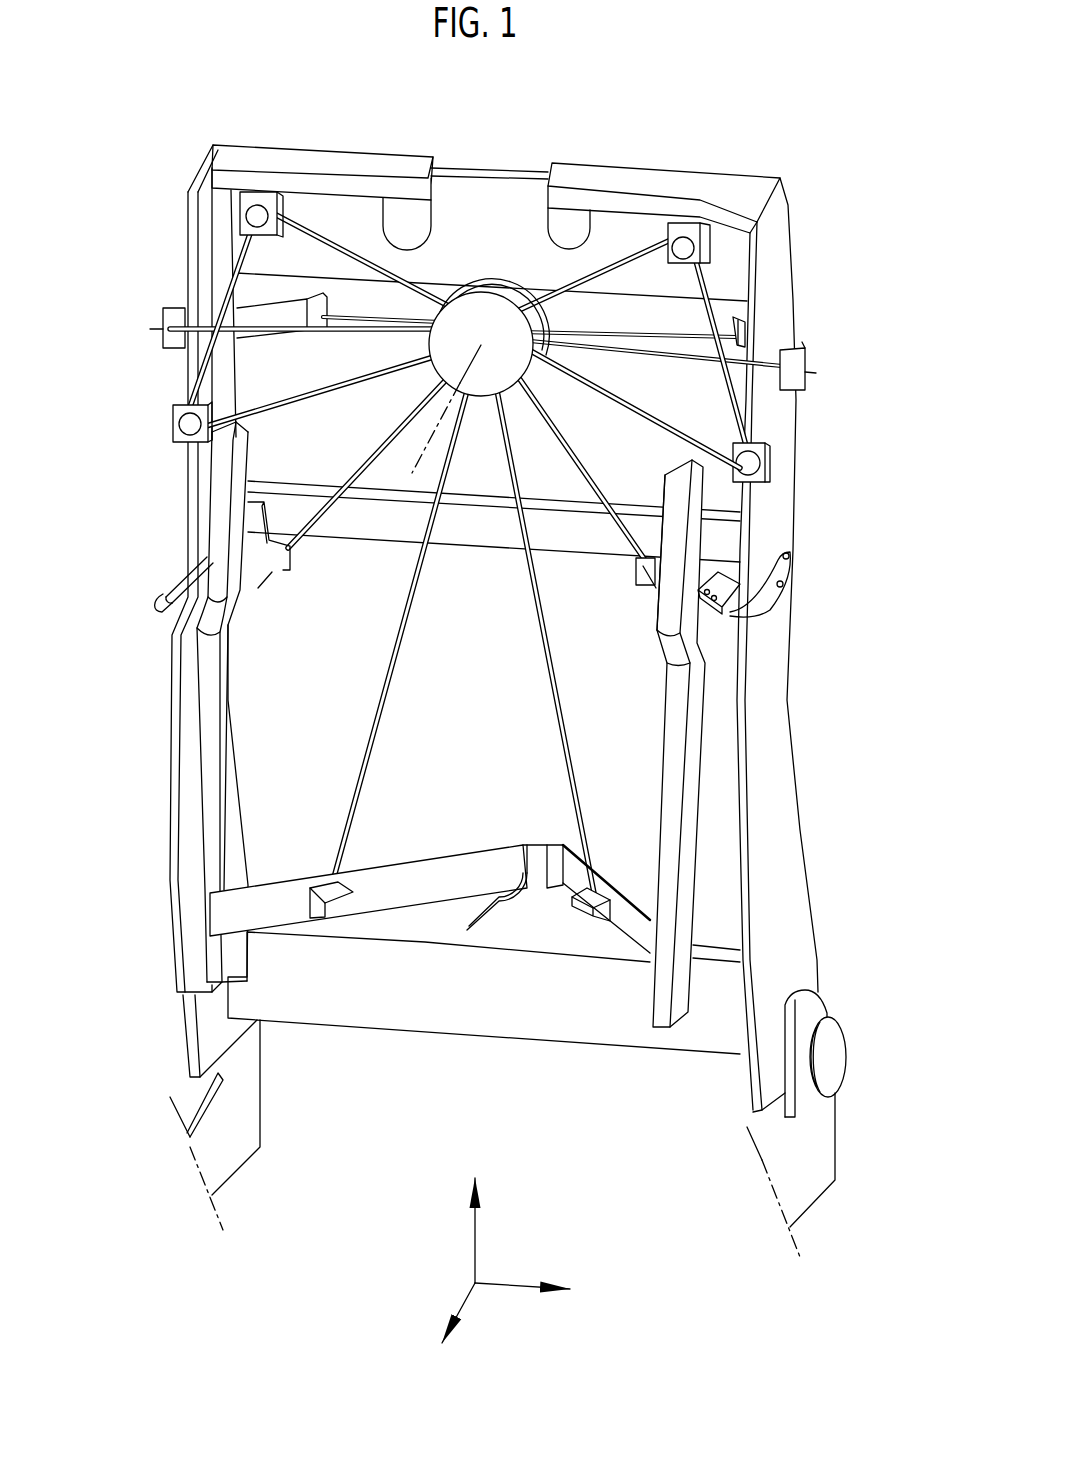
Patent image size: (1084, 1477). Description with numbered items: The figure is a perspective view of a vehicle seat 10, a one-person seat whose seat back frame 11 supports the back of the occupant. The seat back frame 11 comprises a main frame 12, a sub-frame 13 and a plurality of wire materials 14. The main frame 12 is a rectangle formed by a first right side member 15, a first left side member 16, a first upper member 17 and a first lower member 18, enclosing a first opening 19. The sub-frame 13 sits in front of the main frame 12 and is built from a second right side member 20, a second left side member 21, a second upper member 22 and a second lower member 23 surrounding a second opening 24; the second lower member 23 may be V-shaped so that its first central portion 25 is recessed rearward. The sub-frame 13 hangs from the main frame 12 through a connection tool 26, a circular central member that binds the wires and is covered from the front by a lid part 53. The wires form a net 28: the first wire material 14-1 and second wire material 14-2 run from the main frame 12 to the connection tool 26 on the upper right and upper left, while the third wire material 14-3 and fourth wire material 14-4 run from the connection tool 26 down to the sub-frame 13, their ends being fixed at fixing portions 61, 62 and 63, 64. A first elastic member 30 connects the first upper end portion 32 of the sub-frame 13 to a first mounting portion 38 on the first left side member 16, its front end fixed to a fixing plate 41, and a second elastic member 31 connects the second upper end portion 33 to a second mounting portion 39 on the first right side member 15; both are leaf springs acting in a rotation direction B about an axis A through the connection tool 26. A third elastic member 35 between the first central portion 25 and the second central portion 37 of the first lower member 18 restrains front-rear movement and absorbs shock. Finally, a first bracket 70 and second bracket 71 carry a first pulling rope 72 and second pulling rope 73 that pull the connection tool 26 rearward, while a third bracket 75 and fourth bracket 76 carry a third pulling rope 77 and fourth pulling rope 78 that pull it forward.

The seat for a vehicle 10 is at (836, 148).
The seat back frame 11 is at (176, 144).
The main frame 12 is at (268, 148).
The sub-frame 13 is at (698, 737).
The wire materials 14 is at (402, 676).
The first wire material 14-1 is at (336, 250).
The second wire material 14-2 is at (597, 262).
The third wire material 14-3 is at (322, 515).
The fourth wire material 14-4 is at (558, 420).
The first right side member 15 is at (172, 209).
The first left side member 16 is at (792, 232).
The first upper member 17 is at (536, 163).
The first lower member 18 is at (546, 1038).
The first opening 19 is at (735, 783).
The second right side member 20 is at (170, 864).
The second left side member 21 is at (674, 889).
The second upper member 22 is at (468, 527).
The second lower member 23 is at (424, 834).
The second opening 24 is at (217, 717).
The first central portion 25 is at (537, 843).
The connection tool 26 is at (499, 255).
The net 28 is at (345, 648).
The first elastic member 30 is at (717, 553).
The second elastic member 31 is at (205, 550).
The first upper end portion 32 is at (677, 537).
The second upper end portion 33 is at (220, 488).
The third elastic member 35 is at (530, 920).
The second central portion 37 is at (465, 978).
The first mounting portion 38 is at (792, 605).
The second mounting portion 39 is at (175, 612).
The fixing plate 41 is at (755, 603).
The lid part 53 is at (443, 357).
The fixing portion 61 is at (268, 578).
The fixing portion 62 is at (327, 912).
The fixing portion 63 is at (634, 574).
The fixing portion 64 is at (603, 885).
The first bracket 70 is at (325, 300).
The second bracket 71 is at (740, 322).
The first pulling rope 72 is at (430, 318).
The second pulling rope 73 is at (700, 300).
The third bracket 75 is at (172, 312).
The fourth bracket 76 is at (797, 355).
The third pulling rope 77 is at (363, 333).
The fourth pulling rope 78 is at (607, 353).
The axis A is at (417, 468).
The rotation direction B is at (360, 560).